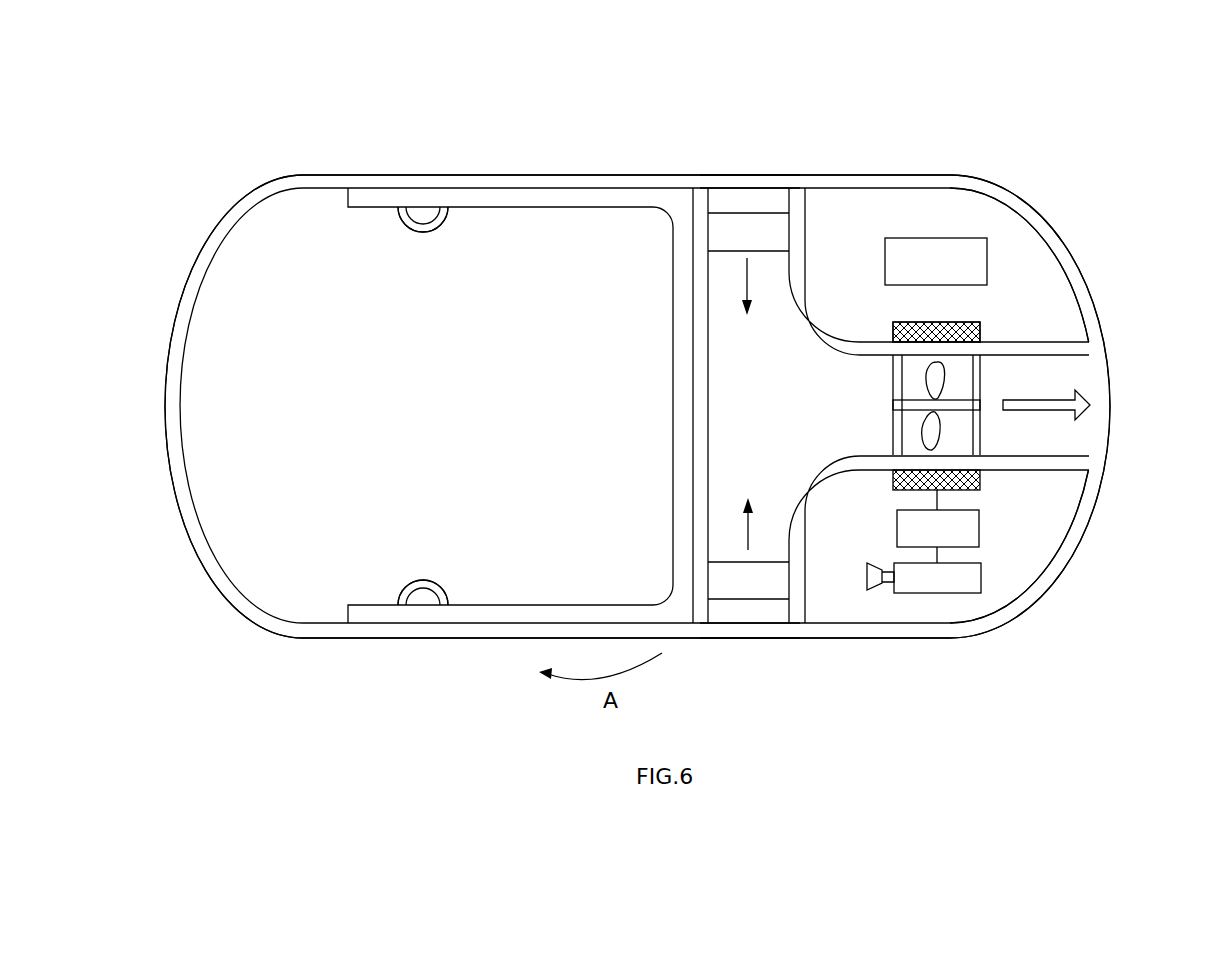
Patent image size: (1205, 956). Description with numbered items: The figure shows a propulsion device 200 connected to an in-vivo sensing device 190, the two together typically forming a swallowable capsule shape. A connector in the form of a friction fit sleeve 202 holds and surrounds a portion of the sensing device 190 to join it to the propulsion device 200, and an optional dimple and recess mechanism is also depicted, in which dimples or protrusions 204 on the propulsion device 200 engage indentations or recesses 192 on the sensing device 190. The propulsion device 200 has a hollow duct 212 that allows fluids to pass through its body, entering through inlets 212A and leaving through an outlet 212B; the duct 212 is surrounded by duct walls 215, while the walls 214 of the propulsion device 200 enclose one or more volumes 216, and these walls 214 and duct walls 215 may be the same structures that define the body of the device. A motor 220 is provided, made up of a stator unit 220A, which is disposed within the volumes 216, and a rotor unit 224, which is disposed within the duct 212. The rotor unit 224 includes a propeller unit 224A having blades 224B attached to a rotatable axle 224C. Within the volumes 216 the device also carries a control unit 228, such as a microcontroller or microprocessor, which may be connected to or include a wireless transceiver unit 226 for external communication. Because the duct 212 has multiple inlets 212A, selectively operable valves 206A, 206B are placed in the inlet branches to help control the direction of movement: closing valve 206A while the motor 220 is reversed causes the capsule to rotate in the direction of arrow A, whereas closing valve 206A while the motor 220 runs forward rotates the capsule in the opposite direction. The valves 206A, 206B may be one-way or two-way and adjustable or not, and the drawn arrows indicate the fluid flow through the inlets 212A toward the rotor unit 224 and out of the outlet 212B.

The in-vivo sensing device 190 is at (248, 570).
The indentation or recess 192 is at (413, 238).
The propulsion device 200 is at (320, 91).
The friction fit sleeve 202 is at (377, 618).
The dimple or protrusion 204 is at (440, 222).
The selectively operable valve 206A is at (752, 235).
The selectively operable valve 206B is at (767, 590).
The hollow duct 212 is at (761, 432).
The inlet 212A is at (733, 175).
The outlet 212B is at (1112, 380).
The wall 214 is at (1027, 615).
The duct wall 215 is at (948, 238).
The volume 216 is at (1035, 282).
The motor 220 is at (985, 330).
The stator unit 220A is at (893, 332).
The rotor unit 224 is at (893, 385).
The propeller unit 224A is at (962, 382).
The blade 224B is at (953, 425).
The rotatable axle 224C is at (900, 425).
The wireless transceiver unit 226 is at (982, 575).
The control unit 228 is at (980, 530).